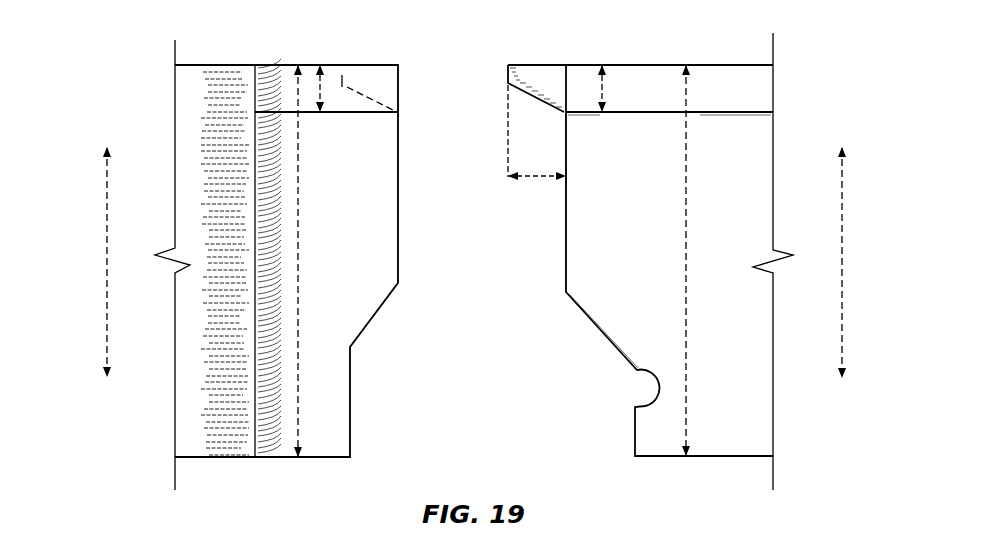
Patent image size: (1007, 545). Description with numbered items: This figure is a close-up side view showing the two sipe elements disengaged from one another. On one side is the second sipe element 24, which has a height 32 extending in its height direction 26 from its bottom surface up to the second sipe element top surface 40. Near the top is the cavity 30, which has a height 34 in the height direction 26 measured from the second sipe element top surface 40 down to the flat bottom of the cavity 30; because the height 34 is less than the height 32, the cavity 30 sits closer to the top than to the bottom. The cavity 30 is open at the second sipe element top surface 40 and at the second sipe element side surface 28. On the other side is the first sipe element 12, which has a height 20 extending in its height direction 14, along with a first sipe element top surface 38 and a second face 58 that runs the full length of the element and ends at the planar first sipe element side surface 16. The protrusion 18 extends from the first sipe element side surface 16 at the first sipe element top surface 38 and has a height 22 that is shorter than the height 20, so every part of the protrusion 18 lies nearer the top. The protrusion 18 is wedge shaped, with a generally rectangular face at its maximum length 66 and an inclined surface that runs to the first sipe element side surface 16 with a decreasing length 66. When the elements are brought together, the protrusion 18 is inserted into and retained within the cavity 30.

The first sipe element 12 is at (767, 90).
The height direction 14 is at (843, 265).
The first sipe element side surface 16 is at (564, 228).
The protrusion 18 is at (545, 66).
The height 20 is at (688, 262).
The height 22 is at (603, 90).
The second sipe element 24 is at (351, 432).
The height direction 26 is at (107, 264).
The second sipe element side surface 28 is at (401, 258).
The cavity 30 is at (400, 64).
The height 32 is at (299, 262).
The height 34 is at (322, 90).
The first sipe element top surface 38 is at (718, 60).
The second sipe element top surface 40 is at (269, 58).
The second face 58 is at (759, 152).
The maximum length 66 is at (537, 177).